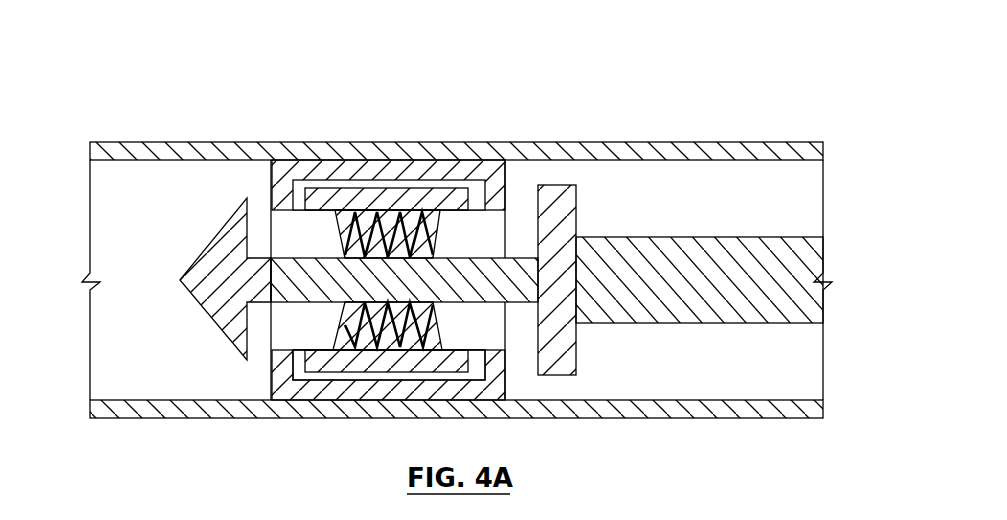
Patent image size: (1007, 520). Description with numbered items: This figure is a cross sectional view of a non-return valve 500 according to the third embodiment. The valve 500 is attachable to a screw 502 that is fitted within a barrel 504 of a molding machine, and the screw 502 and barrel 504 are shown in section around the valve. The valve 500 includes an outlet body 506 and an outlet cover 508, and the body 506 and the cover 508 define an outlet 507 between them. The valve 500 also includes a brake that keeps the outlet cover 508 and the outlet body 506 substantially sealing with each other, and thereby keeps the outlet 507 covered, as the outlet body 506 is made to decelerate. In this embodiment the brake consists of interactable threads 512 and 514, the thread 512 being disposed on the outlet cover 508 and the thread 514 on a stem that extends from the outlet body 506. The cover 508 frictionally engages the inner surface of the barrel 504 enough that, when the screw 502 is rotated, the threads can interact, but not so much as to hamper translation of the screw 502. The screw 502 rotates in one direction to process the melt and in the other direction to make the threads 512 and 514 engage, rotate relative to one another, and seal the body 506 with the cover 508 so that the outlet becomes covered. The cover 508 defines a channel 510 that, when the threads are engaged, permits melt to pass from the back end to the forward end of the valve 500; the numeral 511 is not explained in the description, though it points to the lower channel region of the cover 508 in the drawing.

The non-return valve 500 is at (582, 80).
The screw 502 is at (632, 255).
The barrel 504 is at (773, 146).
The outlet body 506 is at (558, 207).
The outlet 507 is at (538, 383).
The outlet cover 508 is at (452, 170).
The channel 510 is at (378, 184).
The channel 511 is at (298, 368).
The thread 512 is at (348, 230).
The thread 514 is at (342, 233).